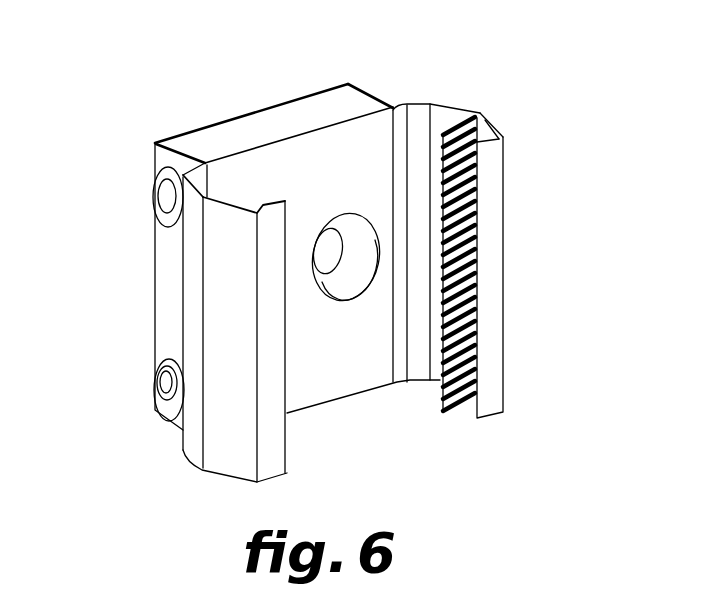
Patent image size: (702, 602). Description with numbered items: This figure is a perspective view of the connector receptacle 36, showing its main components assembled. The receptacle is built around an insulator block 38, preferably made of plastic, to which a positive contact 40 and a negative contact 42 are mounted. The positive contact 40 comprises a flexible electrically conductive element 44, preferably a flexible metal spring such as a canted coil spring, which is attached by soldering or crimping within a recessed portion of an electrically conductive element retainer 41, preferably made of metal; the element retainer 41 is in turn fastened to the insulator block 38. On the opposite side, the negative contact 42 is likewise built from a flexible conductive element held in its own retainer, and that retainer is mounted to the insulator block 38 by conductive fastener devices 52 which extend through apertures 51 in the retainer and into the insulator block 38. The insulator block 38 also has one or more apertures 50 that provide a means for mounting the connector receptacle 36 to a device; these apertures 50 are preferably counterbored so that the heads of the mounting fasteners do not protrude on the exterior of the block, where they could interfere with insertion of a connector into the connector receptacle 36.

The connector receptacle 36 is at (250, 102).
The insulator block 38 is at (345, 135).
The positive contact 40 is at (504, 232).
The electrically conductive element retainer 41 is at (488, 118).
The negative contact 42 is at (167, 270).
The flexible electrically conductive element 44 is at (453, 110).
The apertures 50 is at (340, 302).
The apertures 51 is at (167, 392).
The conductive fastener devices 52 is at (168, 197).